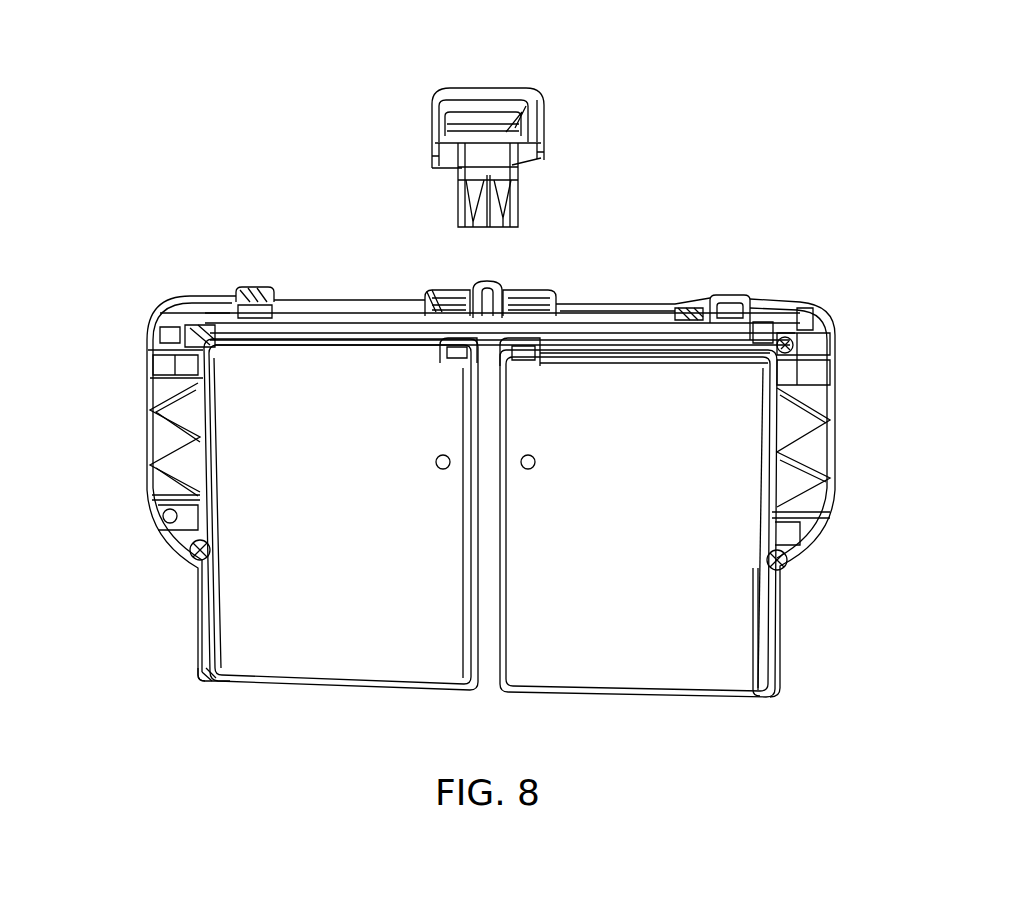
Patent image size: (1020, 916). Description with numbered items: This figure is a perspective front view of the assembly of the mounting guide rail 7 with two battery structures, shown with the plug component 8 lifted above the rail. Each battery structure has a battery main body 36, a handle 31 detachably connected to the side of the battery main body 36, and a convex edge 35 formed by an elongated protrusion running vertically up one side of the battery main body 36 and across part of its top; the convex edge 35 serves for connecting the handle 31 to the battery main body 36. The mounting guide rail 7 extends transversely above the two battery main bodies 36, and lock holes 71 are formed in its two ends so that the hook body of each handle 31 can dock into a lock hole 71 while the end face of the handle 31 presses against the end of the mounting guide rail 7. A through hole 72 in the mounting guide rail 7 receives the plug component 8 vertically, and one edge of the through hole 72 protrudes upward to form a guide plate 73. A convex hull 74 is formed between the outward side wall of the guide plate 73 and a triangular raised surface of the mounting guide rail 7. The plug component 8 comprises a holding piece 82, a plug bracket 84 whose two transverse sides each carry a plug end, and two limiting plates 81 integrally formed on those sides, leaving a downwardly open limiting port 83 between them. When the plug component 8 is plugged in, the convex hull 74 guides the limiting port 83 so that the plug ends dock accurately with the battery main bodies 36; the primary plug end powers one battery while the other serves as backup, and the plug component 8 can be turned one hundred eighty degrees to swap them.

The mounting guide rail 7 is at (475, 491).
The plug component 8 is at (534, 123).
The handle 31 is at (158, 428).
The convex edge 35 is at (207, 684).
The battery main body 36 is at (247, 585).
The lock hole 71 is at (265, 290).
The through hole 72 is at (432, 298).
The guide plate 73 is at (493, 300).
The convex hull 74 is at (668, 357).
The limiting plate 81 is at (478, 182).
The holding piece 82 is at (528, 110).
The limiting port 83 is at (504, 182).
The plug bracket 84 is at (508, 212).